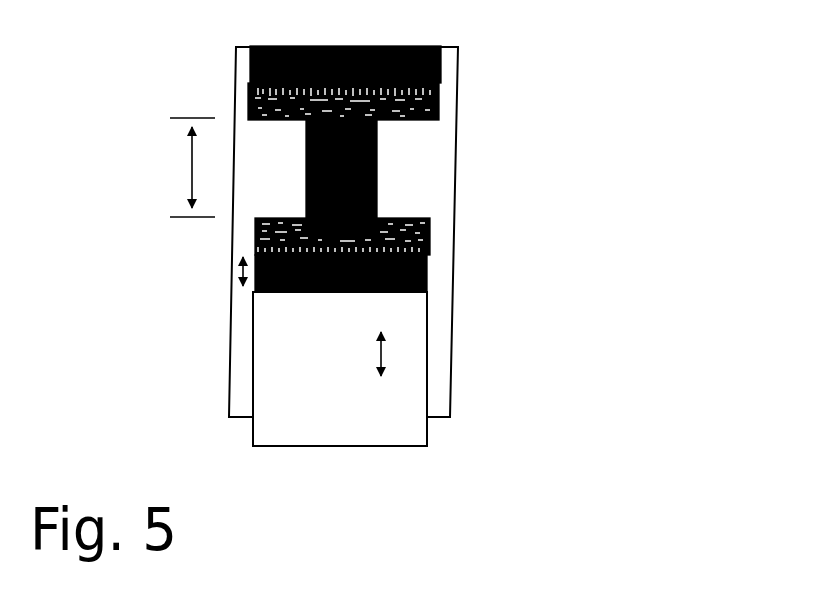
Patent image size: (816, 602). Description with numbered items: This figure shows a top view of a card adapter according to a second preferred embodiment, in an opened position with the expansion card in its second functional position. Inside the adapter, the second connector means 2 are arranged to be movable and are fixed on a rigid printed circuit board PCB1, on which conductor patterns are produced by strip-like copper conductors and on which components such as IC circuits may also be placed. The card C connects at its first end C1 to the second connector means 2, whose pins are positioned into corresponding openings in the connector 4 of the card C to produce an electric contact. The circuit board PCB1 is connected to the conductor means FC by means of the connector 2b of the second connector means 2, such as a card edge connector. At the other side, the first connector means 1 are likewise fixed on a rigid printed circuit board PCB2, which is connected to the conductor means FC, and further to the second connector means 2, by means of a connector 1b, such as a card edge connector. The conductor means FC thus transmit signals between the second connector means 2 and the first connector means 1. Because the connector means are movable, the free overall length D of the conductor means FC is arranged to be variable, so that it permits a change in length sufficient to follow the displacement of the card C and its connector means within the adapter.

The first connector means 1 is at (441, 62).
The rigid printed circuit board PCB2 is at (440, 95).
The connector 1b is at (378, 122).
The conductor means FC is at (378, 175).
The connector 2b is at (380, 213).
The rigid printed circuit board PCB1 is at (430, 240).
The second connector means 2 is at (430, 286).
The connector 4 is at (395, 293).
The card C is at (420, 347).
The first end C1 is at (234, 308).
The free overall length D is at (190, 155).